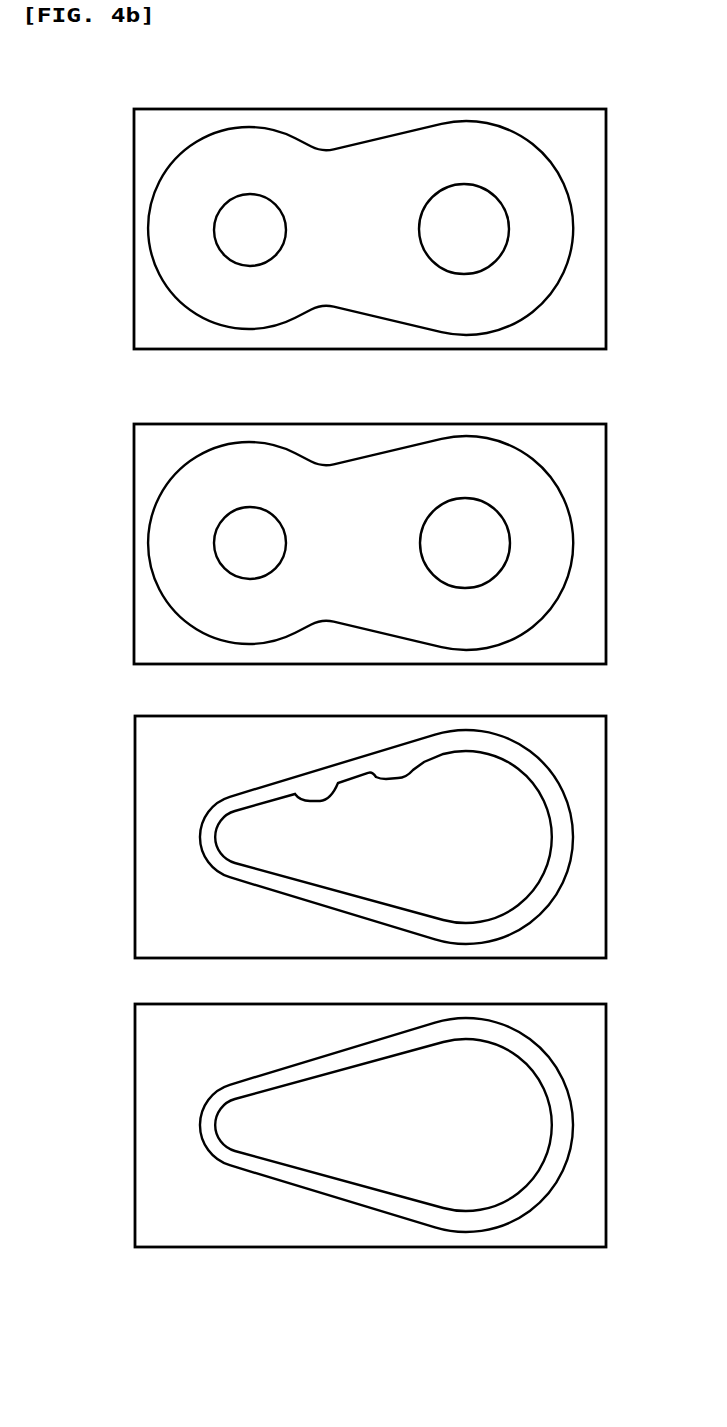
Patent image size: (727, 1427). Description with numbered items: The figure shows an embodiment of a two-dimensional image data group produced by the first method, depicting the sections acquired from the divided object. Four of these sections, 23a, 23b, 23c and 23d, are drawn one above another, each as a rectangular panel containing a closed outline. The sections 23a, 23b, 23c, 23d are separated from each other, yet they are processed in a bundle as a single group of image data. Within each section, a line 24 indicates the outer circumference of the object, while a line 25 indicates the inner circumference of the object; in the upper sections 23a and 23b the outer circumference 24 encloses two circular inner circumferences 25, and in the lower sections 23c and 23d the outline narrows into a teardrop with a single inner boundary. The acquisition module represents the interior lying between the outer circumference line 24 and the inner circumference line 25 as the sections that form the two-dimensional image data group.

The section 23a is at (134, 157).
The section 23b is at (134, 460).
The section 23c is at (134, 757).
The section 23d is at (134, 1046).
The line of the outer circumference 24 is at (516, 134).
The line of the inner circumference 25 is at (507, 208).